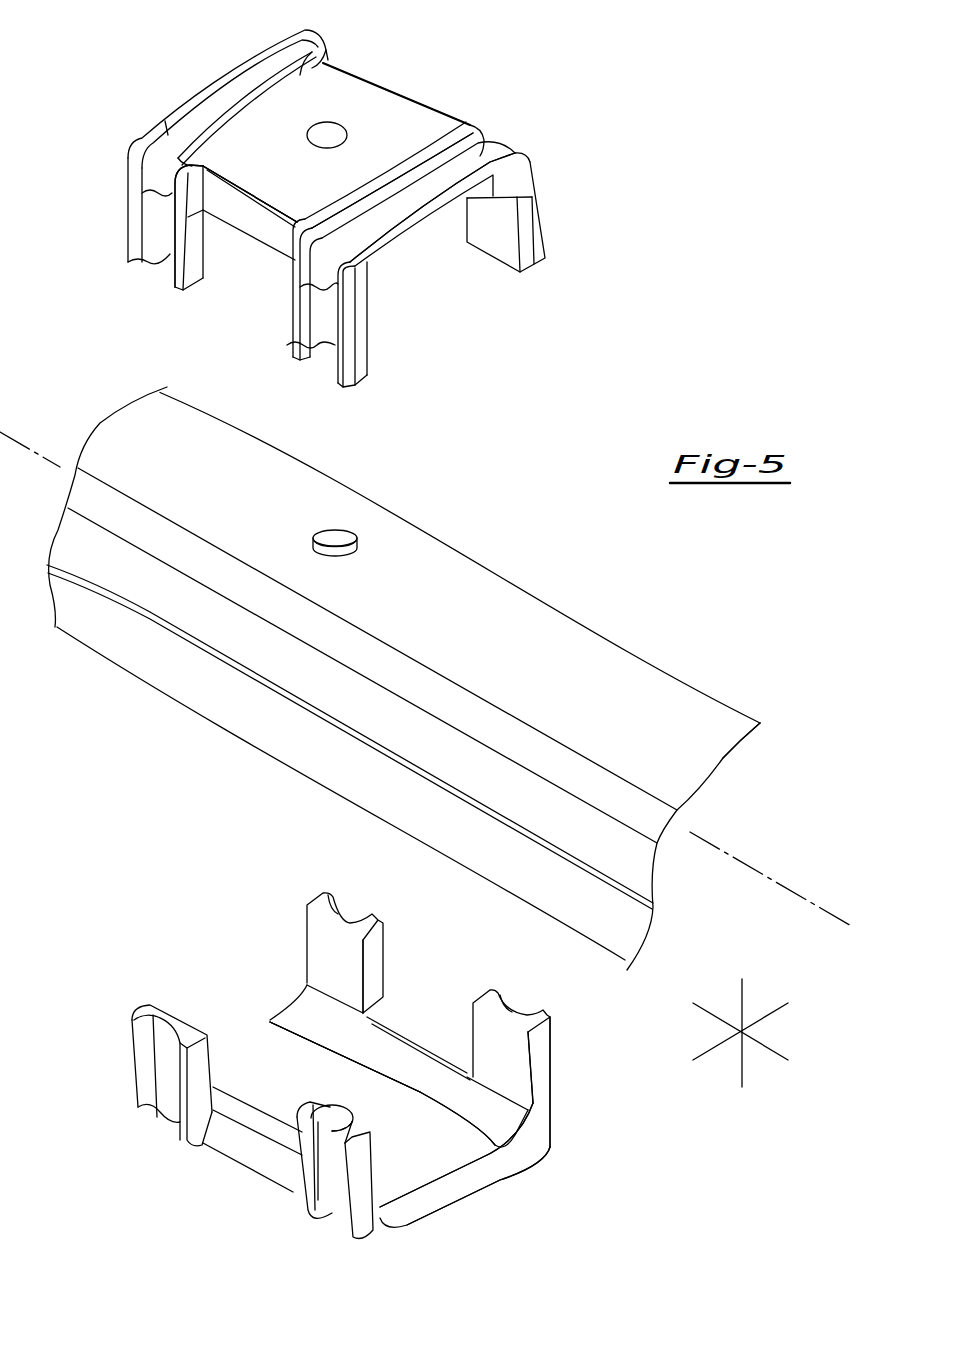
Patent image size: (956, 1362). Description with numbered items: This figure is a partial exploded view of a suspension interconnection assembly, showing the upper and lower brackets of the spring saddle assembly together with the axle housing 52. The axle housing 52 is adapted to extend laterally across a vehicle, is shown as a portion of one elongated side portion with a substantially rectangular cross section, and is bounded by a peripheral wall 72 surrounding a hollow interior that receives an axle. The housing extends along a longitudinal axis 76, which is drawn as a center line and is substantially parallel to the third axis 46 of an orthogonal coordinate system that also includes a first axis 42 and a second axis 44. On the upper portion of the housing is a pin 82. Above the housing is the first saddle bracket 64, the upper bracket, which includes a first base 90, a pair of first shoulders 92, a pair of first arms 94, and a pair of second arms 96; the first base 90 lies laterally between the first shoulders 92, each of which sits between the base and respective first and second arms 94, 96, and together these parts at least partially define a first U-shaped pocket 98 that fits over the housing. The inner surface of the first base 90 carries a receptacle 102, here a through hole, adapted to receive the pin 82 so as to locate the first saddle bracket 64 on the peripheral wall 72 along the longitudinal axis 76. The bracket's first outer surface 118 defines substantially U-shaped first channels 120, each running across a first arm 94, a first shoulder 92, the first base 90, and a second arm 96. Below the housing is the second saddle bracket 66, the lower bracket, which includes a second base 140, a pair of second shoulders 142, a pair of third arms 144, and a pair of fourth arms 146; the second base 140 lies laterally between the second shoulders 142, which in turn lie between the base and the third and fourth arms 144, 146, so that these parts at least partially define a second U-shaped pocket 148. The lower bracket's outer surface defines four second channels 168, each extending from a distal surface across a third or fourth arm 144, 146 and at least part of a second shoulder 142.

The first axis 42 is at (742, 990).
The second axis 44 is at (775, 1013).
The third axis 46 is at (773, 1060).
The axle housing 52 is at (625, 668).
The first saddle bracket 64 is at (418, 78).
The second saddle bracket 66 is at (258, 1022).
The peripheral wall 72 is at (723, 758).
The longitudinal axis 76 is at (838, 905).
The pin 82 is at (337, 533).
The first base 90 is at (340, 92).
The first shoulders 92 is at (513, 183).
The first arms 94 is at (537, 238).
The second arms 96 is at (135, 202).
The first U-shaped pocket 98 is at (245, 262).
The receptacle 102 is at (340, 137).
The first outer surface 118 is at (264, 172).
The first channels 120 is at (153, 240).
The second base 140 is at (427, 1157).
The second shoulders 142 is at (525, 1148).
The third arms 144 is at (305, 1192).
The fourth arms 146 is at (135, 1030).
The second U-shaped pocket 148 is at (382, 1043).
The second channels 168 is at (160, 1082).